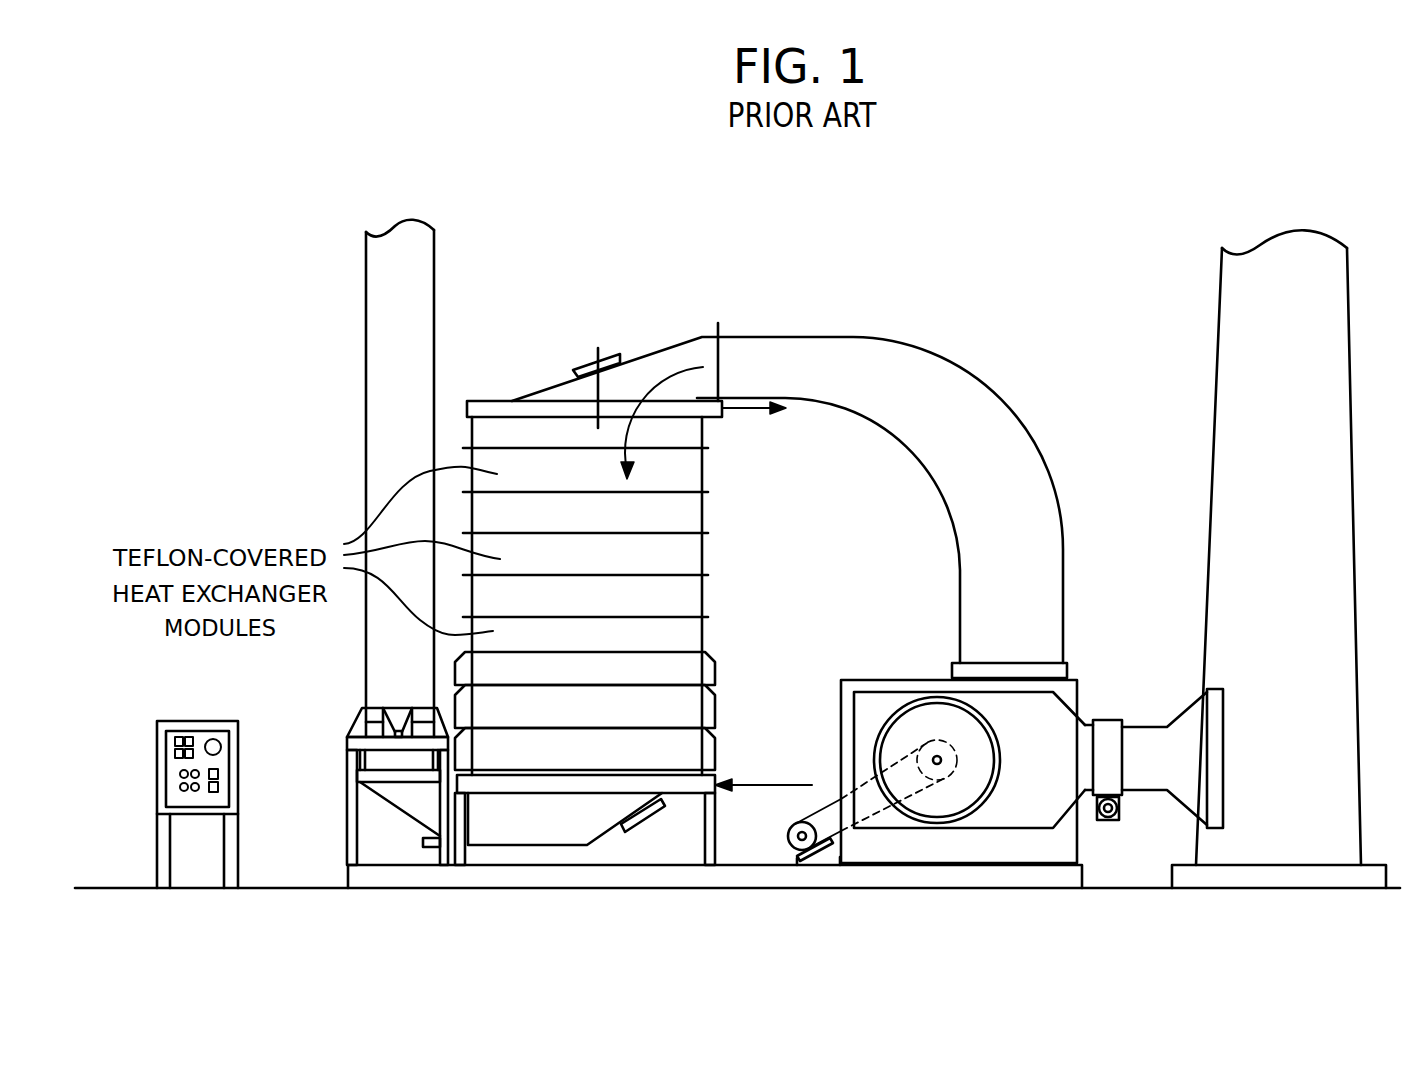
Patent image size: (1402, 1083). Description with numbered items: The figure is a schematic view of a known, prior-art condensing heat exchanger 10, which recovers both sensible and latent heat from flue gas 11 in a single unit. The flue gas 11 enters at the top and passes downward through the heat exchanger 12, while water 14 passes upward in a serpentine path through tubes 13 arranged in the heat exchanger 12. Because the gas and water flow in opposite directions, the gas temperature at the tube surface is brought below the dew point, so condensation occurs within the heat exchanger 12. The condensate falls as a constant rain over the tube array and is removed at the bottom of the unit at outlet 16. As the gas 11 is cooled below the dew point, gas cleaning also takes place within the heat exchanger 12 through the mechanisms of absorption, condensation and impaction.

The condensing heat exchanger 10 is at (748, 262).
The flue gas 11 is at (657, 385).
The heat exchanger 12 is at (682, 553).
The tubes 13 is at (680, 488).
The water 14 is at (772, 785).
The outlet 16 is at (440, 853).